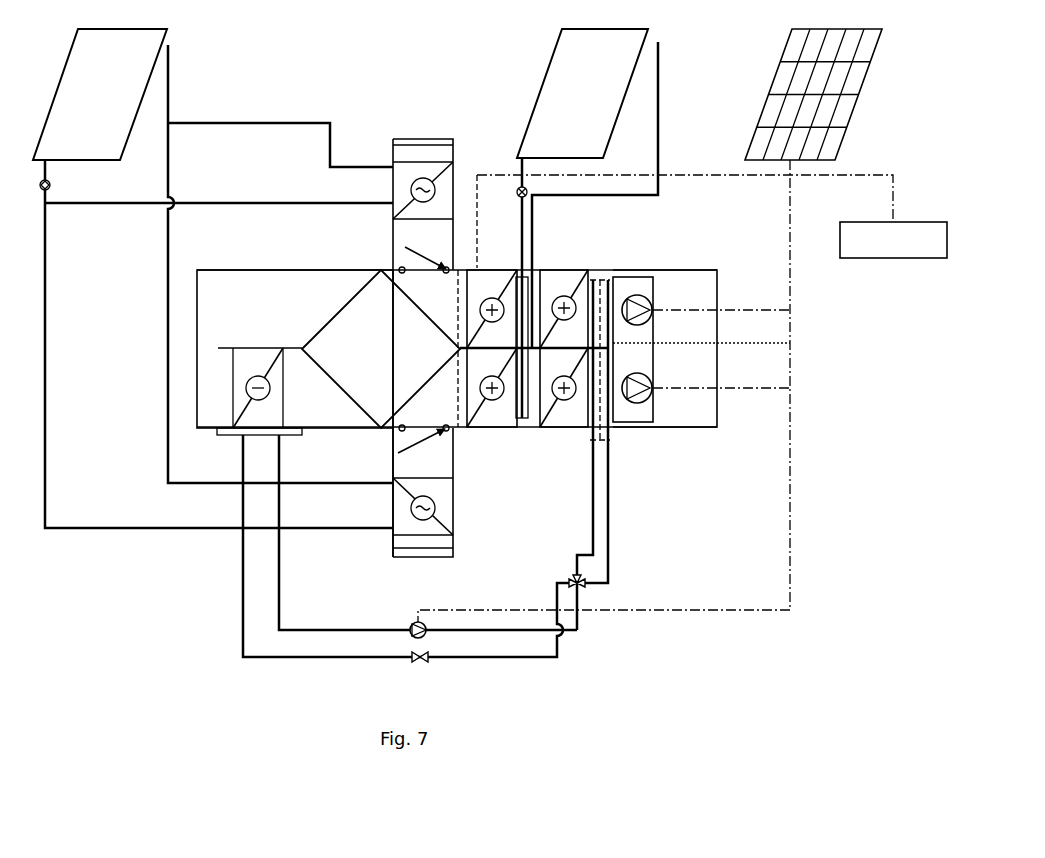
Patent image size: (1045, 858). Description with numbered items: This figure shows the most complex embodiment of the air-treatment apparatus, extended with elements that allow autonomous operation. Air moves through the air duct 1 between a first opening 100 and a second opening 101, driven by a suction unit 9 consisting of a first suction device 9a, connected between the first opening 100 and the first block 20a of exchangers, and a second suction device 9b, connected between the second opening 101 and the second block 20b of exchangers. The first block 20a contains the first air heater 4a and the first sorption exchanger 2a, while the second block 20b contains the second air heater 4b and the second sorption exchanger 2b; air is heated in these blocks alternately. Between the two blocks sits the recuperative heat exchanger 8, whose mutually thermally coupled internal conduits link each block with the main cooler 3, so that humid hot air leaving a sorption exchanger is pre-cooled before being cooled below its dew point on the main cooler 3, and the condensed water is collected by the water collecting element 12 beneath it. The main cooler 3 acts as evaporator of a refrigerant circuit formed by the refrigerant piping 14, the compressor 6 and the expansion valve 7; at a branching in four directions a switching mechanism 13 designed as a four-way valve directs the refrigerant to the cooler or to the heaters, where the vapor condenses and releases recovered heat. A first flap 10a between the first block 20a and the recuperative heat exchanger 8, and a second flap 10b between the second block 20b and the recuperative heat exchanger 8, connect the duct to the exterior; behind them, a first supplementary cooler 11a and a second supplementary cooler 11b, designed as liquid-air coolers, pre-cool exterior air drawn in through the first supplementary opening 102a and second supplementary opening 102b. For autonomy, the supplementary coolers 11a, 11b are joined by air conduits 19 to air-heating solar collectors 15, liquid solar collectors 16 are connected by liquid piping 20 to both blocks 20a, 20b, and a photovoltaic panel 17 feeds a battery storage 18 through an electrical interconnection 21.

The air duct 1 is at (221, 268).
The first sorption exchanger 2a is at (498, 268).
The second sorption exchanger 2b is at (486, 432).
The main cooler 3 is at (261, 344).
The first air heater 4a is at (558, 268).
The second air heater 4b is at (557, 432).
The compressor 6 is at (410, 624).
The expansion valve 7 is at (415, 659).
The recuperative heat exchanger 8 is at (337, 346).
The suction unit 9 is at (658, 369).
The first suction device 9a is at (637, 290).
The second suction device 9b is at (636, 420).
The first flap 10a is at (416, 253).
The second flap 10b is at (414, 447).
The first supplementary cooler 11a is at (392, 204).
The second supplementary cooler 11b is at (391, 512).
The water collecting element 12 is at (228, 438).
The switching mechanism 13 is at (583, 583).
The refrigerant piping 14 is at (606, 346).
The air solar collectors 15 is at (171, 33).
The liquid solar collectors 16 is at (556, 43).
The photovoltaic panel 17 is at (775, 70).
The battery storage 18 is at (888, 260).
The air conduit 19 is at (171, 77).
The liquid piping 20 is at (661, 150).
The first block of exchangers 20a is at (592, 268).
The second block of exchangers 20b is at (592, 432).
The electrical interconnection 21 is at (793, 350).
The first opening 100 is at (688, 268).
The second opening 101 is at (685, 432).
The first supplementary opening 102a is at (430, 137).
The second supplementary opening 102b is at (428, 558).